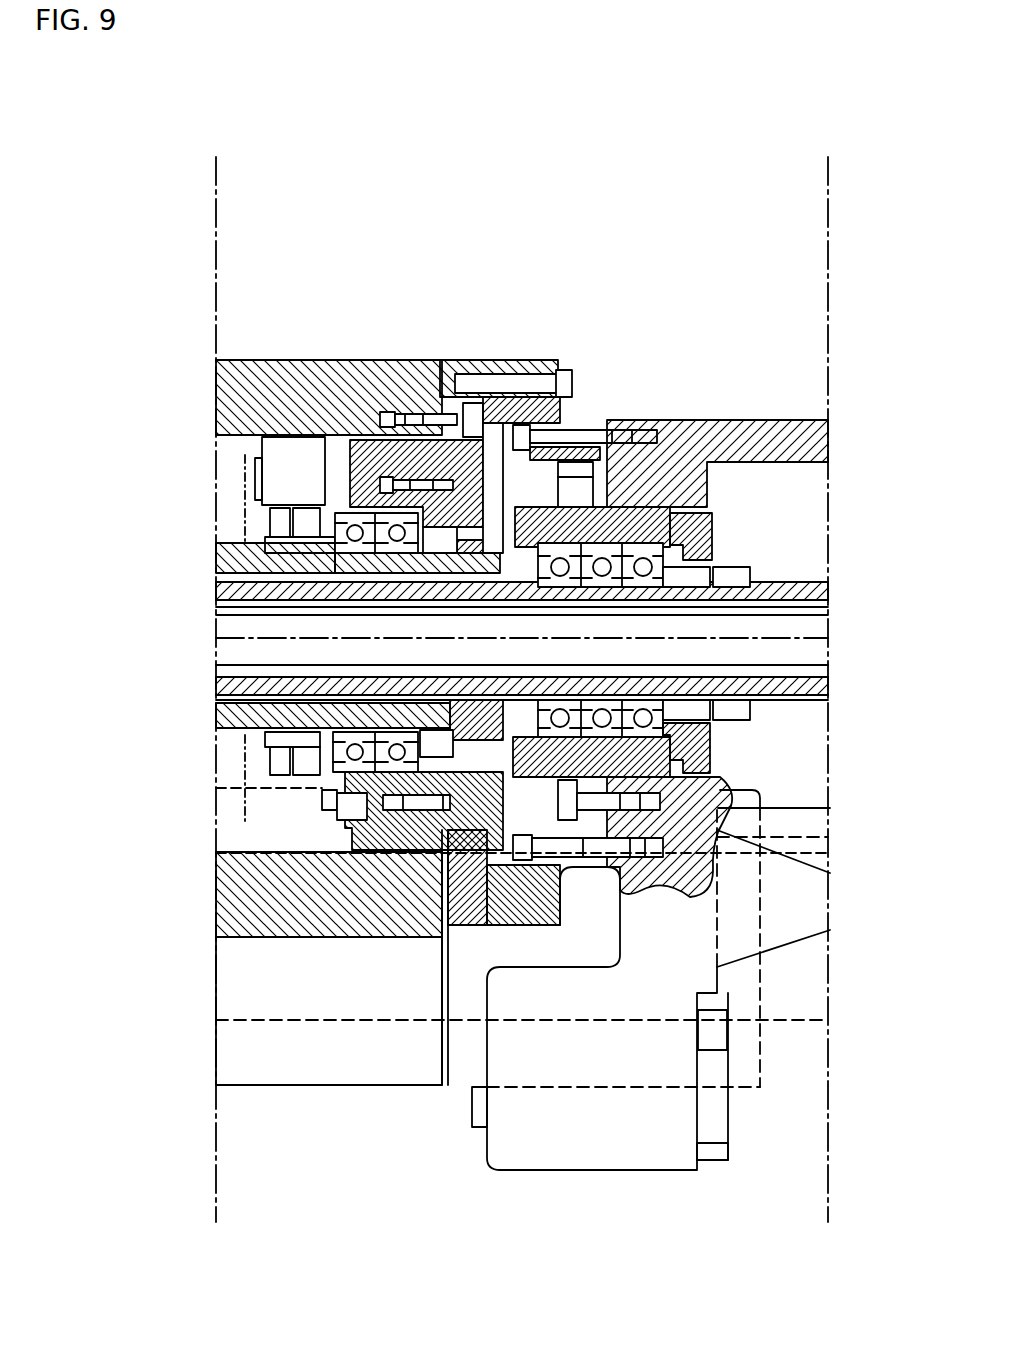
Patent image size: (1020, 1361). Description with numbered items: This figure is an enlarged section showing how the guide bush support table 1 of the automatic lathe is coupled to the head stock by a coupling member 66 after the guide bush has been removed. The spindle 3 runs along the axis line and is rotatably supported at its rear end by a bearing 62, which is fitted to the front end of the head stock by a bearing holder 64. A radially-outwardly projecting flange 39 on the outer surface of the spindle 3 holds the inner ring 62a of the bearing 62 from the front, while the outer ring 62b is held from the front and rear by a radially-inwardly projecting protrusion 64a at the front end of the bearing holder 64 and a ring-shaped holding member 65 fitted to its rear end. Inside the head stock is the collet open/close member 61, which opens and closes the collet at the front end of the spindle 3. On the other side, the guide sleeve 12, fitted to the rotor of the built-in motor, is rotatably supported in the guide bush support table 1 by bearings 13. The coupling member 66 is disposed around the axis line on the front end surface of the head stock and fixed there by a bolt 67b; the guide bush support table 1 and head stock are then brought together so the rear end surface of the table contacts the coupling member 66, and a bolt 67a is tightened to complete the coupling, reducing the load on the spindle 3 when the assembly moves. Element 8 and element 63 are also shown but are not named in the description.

The guide bush support table 1 is at (285, 362).
The spindle 3 is at (810, 590).
The brake / clamp member 8 is at (667, 808).
The guide sleeve 12 is at (236, 568).
The bearing 13 is at (367, 518).
The flange 39 is at (503, 573).
The collet open/close member 61 is at (830, 427).
The bearing 62 is at (673, 738).
The inner ring 62a is at (656, 583).
The outer ring 62b is at (642, 543).
The spacer ring 63 is at (737, 714).
The bearing holder 64 is at (573, 462).
The protrusion 64a is at (523, 716).
The holding member 65 is at (700, 528).
The coupling member 66 is at (505, 358).
The bolt 67a is at (514, 422).
The bolt 67b is at (610, 428).